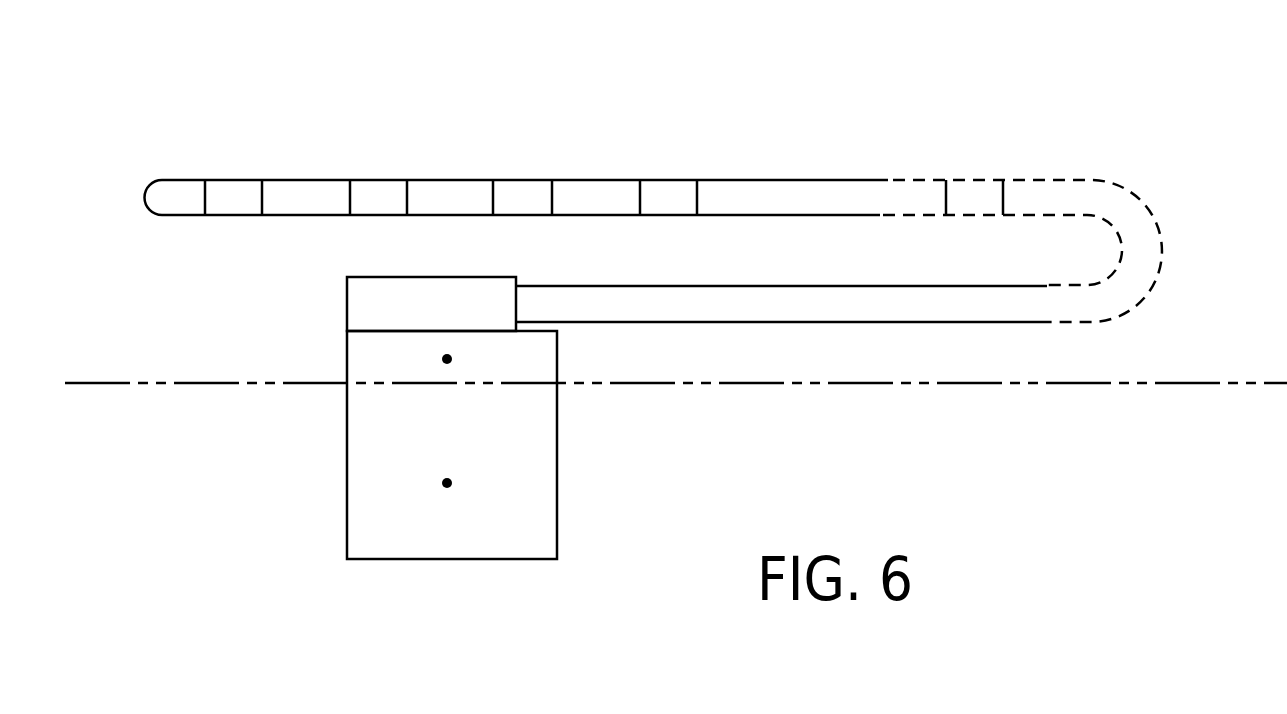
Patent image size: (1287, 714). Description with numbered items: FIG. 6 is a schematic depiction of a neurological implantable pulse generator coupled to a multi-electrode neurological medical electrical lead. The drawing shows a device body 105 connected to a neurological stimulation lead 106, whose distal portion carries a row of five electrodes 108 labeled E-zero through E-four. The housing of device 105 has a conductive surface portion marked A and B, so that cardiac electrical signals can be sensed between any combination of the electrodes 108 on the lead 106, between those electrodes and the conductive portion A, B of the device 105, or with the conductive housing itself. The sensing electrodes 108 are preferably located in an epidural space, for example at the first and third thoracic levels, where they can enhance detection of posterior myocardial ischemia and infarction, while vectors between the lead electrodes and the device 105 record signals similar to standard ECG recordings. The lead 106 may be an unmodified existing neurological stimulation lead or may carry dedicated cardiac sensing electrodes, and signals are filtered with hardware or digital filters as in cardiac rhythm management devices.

The device body 105 is at (484, 559).
The neurological stimulation lead 106 is at (968, 323).
The electrodes 108 is at (262, 178).